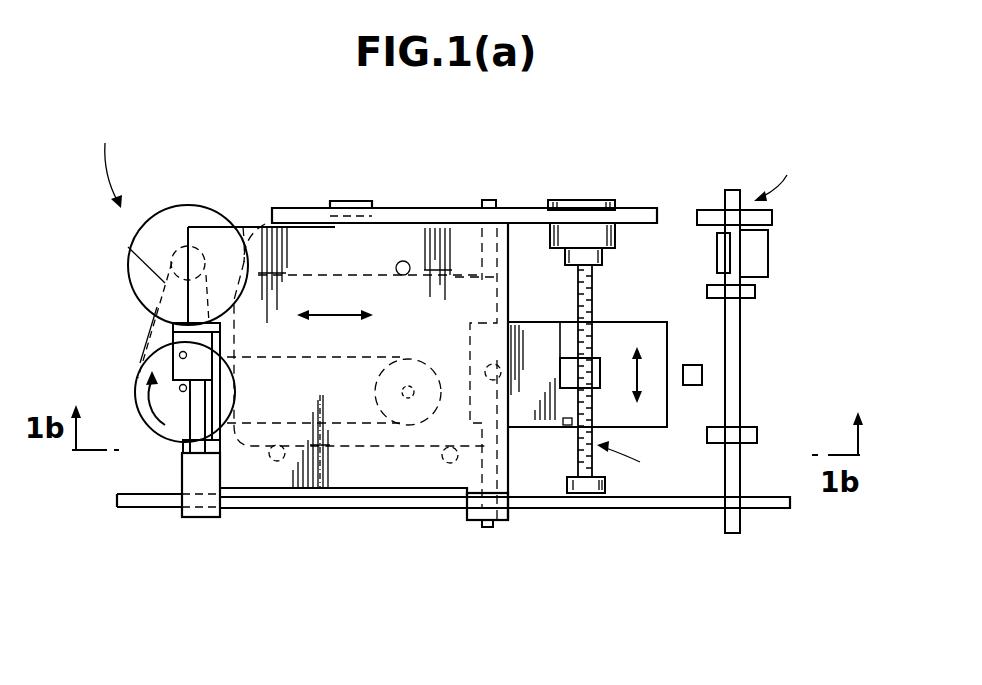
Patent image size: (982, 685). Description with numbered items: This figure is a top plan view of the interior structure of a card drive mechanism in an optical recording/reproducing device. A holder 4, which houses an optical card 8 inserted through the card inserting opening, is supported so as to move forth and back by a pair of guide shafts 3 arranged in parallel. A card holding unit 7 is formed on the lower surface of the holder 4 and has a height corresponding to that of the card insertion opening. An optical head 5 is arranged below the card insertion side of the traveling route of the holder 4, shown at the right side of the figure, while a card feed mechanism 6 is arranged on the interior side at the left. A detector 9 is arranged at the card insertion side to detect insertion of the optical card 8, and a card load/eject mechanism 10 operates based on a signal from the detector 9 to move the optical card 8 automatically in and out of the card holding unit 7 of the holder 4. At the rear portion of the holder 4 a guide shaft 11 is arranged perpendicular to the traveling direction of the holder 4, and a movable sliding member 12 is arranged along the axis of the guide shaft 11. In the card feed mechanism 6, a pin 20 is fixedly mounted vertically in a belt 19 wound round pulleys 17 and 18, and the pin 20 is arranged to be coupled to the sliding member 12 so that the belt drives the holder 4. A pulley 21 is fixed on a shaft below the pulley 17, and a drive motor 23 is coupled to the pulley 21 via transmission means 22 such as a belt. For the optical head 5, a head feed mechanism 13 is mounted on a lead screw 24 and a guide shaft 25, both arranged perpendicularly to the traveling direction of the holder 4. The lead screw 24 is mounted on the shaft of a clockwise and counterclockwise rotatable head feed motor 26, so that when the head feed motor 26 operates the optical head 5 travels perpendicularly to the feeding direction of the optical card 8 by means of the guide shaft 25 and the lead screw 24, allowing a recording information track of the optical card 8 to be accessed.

The guide shafts 3 is at (406, 207).
The holder 4 is at (246, 235).
The optical head 5 is at (533, 320).
The card feed mechanism 6 is at (110, 164).
The card holding unit 7 is at (405, 262).
The optical card 8 is at (268, 300).
The detector 9 is at (695, 365).
The card load/eject mechanism 10 is at (782, 170).
The guide shaft 11 is at (165, 440).
The sliding member 12 is at (170, 320).
The head feed mechanism 13 is at (668, 483).
The pulley 17 is at (140, 355).
The pulley 18 is at (425, 425).
The belt 19 is at (360, 425).
The pin 20 is at (160, 347).
The pulley 21 is at (143, 416).
The transmission means 22 is at (128, 247).
The drive motor 23 is at (164, 210).
The lead screw 24 is at (598, 292).
The guide shaft 25 is at (497, 480).
The head feed motor 26 is at (580, 200).